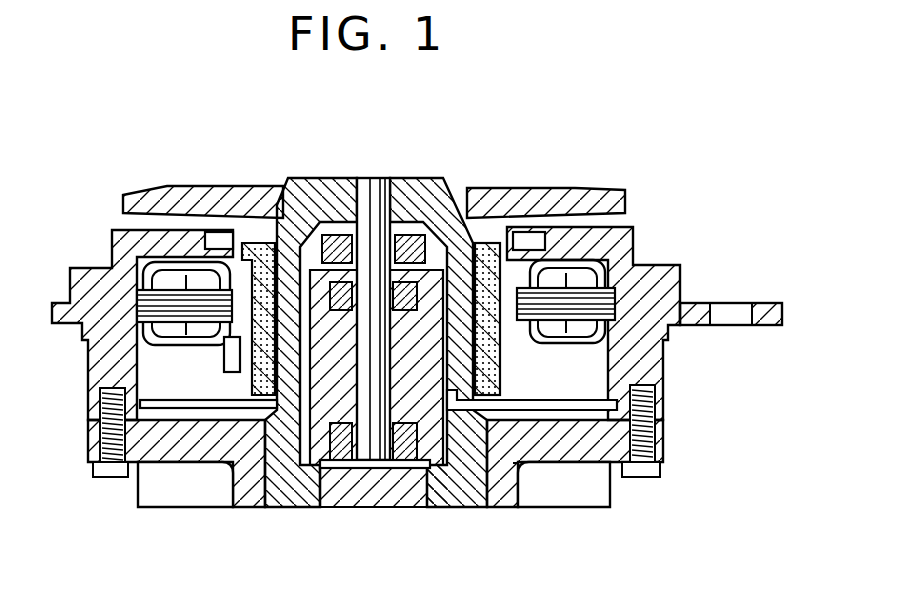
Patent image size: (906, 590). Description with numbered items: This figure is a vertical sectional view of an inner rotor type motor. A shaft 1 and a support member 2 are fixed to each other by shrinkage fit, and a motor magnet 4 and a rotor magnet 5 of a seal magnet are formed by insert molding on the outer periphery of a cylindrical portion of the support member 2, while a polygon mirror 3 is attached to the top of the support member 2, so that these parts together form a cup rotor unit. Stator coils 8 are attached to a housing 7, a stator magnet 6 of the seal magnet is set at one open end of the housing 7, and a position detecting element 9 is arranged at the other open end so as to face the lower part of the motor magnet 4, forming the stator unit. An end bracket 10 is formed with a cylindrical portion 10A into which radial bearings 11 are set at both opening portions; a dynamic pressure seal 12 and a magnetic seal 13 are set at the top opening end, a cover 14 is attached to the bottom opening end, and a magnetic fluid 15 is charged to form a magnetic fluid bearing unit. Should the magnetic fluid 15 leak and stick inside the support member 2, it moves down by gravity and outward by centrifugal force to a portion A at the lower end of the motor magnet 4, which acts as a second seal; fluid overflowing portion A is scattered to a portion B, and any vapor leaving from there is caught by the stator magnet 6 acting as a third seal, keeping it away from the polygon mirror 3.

The shaft 1 is at (372, 180).
The support member 2 is at (453, 182).
The polygon mirror 3 is at (530, 188).
The motor magnet 4 is at (487, 397).
The rotor magnet 5 is at (546, 240).
The stator magnet 6 is at (222, 233).
The housing 7 is at (92, 277).
The stator coils 8 is at (167, 330).
The position detecting element 9 is at (228, 365).
The end bracket 10 is at (247, 455).
The cylindrical portion 10A is at (441, 362).
The radial bearings 11 is at (268, 250).
The dynamic pressure seal 12 is at (330, 240).
The magnetic seal 13 is at (413, 247).
The cover 14 is at (460, 490).
The magnetic fluid 15 is at (400, 400).
The portion A is at (513, 463).
The portion B is at (180, 369).